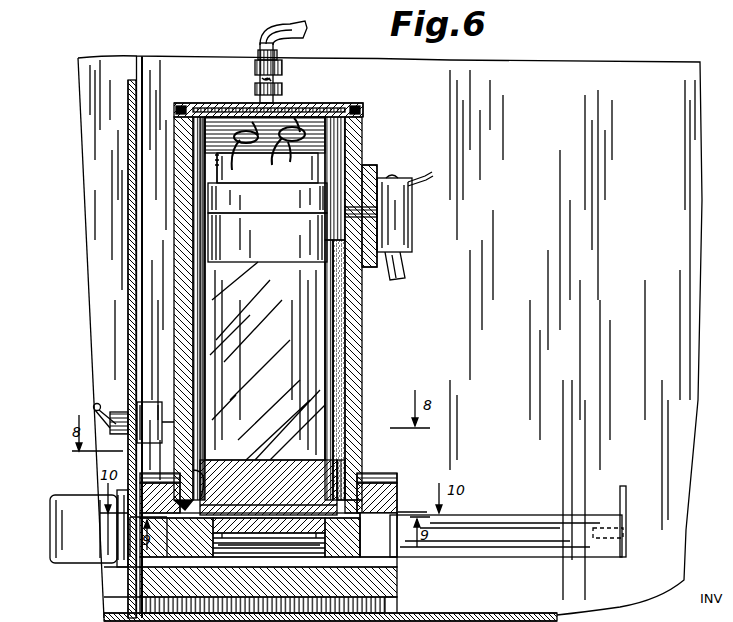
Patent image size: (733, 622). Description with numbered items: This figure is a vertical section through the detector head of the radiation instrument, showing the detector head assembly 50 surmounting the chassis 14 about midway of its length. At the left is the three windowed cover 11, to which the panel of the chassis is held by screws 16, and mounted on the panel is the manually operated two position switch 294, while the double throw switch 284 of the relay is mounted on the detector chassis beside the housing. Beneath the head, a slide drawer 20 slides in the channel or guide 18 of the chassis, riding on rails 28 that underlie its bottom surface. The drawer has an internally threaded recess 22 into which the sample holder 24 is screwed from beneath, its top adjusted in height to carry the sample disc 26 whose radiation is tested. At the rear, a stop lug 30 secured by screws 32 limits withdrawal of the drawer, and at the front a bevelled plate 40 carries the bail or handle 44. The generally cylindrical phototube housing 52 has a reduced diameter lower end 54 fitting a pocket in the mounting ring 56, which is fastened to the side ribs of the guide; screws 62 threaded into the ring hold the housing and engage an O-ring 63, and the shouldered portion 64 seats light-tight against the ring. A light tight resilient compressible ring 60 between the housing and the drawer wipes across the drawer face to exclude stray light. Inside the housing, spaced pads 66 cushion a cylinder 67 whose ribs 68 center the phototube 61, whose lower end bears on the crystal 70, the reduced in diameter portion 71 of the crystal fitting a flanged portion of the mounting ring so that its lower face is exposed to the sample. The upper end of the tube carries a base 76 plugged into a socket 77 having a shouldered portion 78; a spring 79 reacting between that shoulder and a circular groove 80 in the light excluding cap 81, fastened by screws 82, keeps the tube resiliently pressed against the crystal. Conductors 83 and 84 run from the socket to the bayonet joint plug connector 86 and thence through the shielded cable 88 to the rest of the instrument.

The three windowed cover 11 is at (130, 68).
The chassis 14 is at (128, 128).
The screws 16 is at (128, 155).
The channel or guide 18 is at (398, 578).
The slide drawer 20 is at (516, 500).
The internally threaded recess 22 is at (314, 535).
The sample holder 24 is at (247, 535).
The disc 26 is at (252, 516).
The rails 28 is at (398, 561).
The stop lug 30 is at (627, 493).
The screws 32 is at (626, 534).
The bevelled plate 40 is at (115, 530).
The bail or handle 44 is at (75, 518).
The detector head assembly 50 is at (293, 291).
The phototube housing 52 is at (358, 354).
The reduced diameter lower end 54 is at (350, 480).
The mounting ring 56 is at (390, 458).
The light tight resilient compressible ring 60 is at (190, 500).
The phototube 61 is at (265, 282).
The screws 62 is at (398, 478).
The O-ring 63 is at (363, 518).
The shouldered portion 64 is at (362, 470).
The pads 66 is at (340, 307).
The cylinder 67 is at (338, 311).
The ribs 68 is at (325, 331).
The crystal 70 is at (266, 462).
The reduced in diameter portion 71 is at (330, 506).
The base 76 is at (276, 243).
The socket 77 is at (205, 200).
The shouldered portion 78 is at (264, 178).
The spring 79 is at (236, 116).
The circular groove 80 is at (332, 103).
The light excluding cap 81 is at (308, 103).
The screws 82 is at (362, 108).
The conductor 83 is at (238, 148).
The conductor 84 is at (270, 150).
The bayonet joint plug connector 86 is at (262, 80).
The shielded cable 88 is at (282, 28).
The double throw switch 284 is at (412, 208).
The two position switch 294 is at (97, 403).